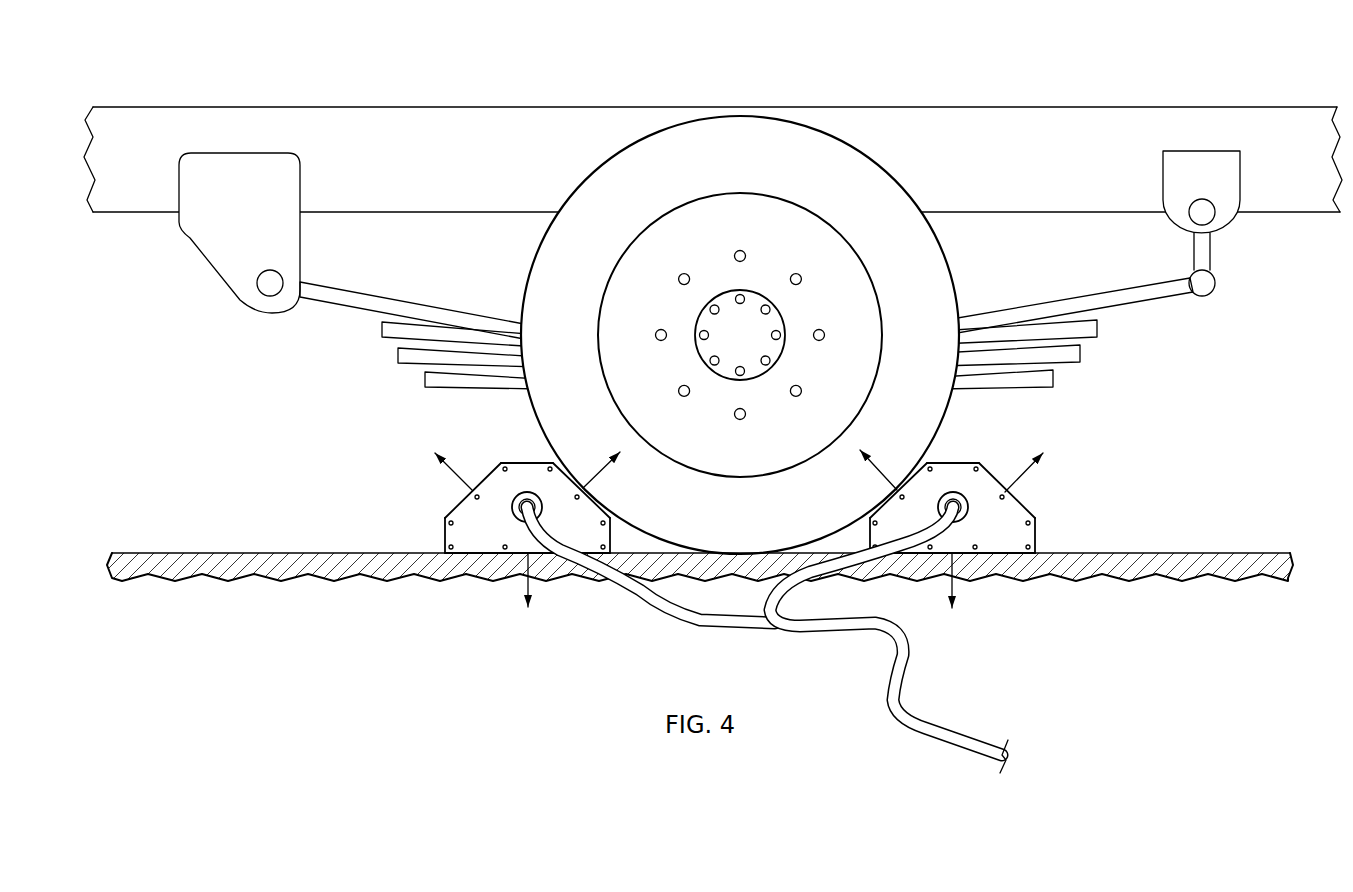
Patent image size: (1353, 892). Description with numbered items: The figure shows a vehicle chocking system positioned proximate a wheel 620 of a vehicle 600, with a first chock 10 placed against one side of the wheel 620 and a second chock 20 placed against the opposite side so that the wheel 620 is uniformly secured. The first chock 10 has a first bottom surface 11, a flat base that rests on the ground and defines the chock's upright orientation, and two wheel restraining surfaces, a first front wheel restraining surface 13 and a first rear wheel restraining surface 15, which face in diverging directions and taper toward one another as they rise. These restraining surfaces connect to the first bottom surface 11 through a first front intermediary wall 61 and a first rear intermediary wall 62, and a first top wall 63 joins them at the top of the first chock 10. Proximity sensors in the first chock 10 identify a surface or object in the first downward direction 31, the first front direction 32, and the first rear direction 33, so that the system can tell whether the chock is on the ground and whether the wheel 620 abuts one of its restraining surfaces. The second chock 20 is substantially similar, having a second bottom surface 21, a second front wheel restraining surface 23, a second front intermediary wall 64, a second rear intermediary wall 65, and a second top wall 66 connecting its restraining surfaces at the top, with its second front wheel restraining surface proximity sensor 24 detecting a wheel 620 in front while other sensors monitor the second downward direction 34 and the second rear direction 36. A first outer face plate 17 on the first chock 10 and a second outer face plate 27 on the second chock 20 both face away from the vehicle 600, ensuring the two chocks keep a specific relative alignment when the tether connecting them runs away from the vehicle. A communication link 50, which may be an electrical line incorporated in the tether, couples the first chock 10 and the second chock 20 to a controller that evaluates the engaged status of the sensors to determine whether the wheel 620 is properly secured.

The vehicle 600 is at (342, 97).
The wheel 620 is at (957, 275).
The first chock 10 is at (494, 517).
The second chock 20 is at (986, 517).
The first bottom surface 11 is at (482, 553).
The first front wheel restraining surface 13 is at (486, 472).
The first rear wheel restraining surface 15 is at (568, 472).
The first outer face plate 17 is at (462, 547).
The first front intermediary wall 61 is at (443, 538).
The first rear intermediary wall 62 is at (612, 527).
The first top wall 63 is at (527, 462).
The first downward direction 31 is at (530, 598).
The first front direction 32 is at (455, 474).
The first rear direction 33 is at (607, 466).
The second bottom surface 21 is at (933, 550).
The second front wheel restraining surface 23 is at (913, 470).
The second front wheel restraining surface proximity sensor 24 is at (993, 472).
The second outer face plate 27 is at (1017, 547).
The second front intermediary wall 64 is at (867, 530).
The second rear intermediary wall 65 is at (1037, 540).
The top wall of second chock 66 is at (953, 462).
The second downward direction 34 is at (956, 597).
The second rear direction 36 is at (872, 464).
The communication link 50 is at (907, 668).